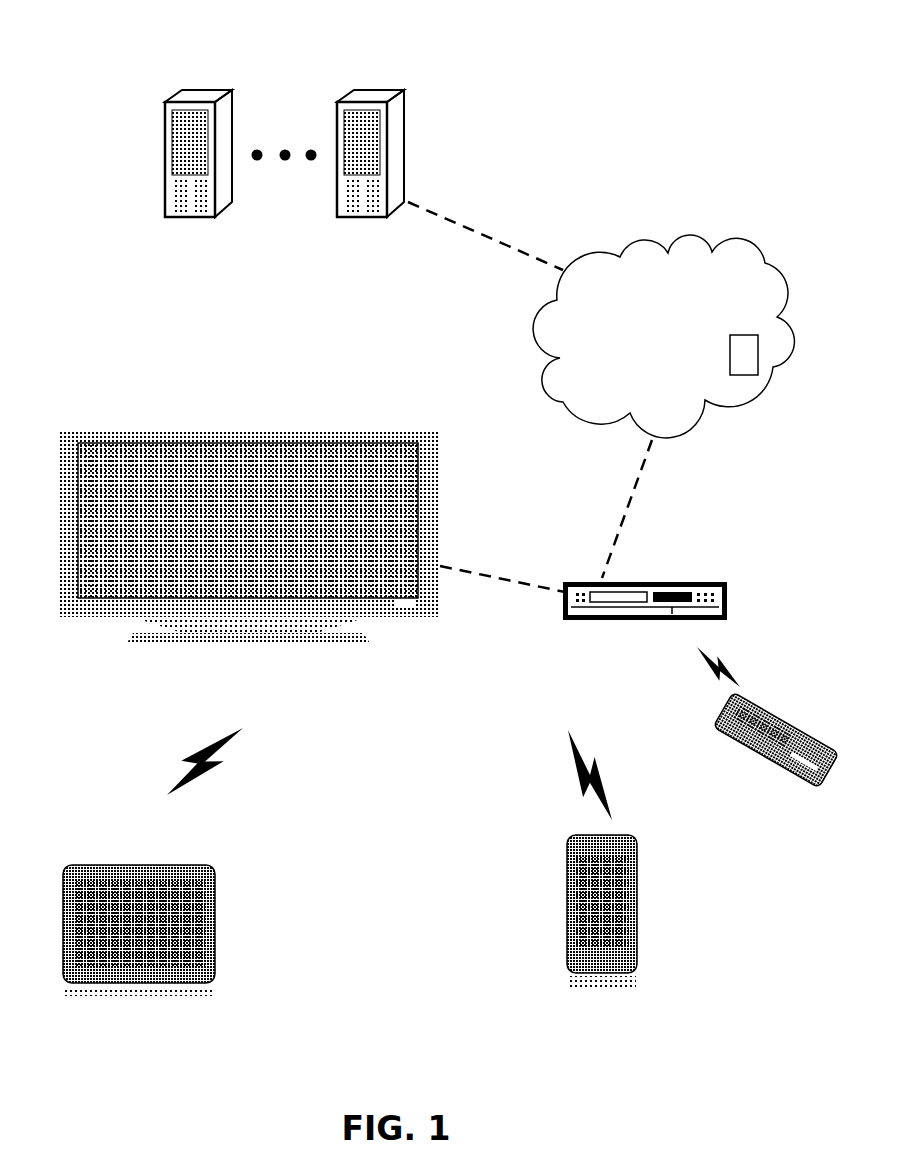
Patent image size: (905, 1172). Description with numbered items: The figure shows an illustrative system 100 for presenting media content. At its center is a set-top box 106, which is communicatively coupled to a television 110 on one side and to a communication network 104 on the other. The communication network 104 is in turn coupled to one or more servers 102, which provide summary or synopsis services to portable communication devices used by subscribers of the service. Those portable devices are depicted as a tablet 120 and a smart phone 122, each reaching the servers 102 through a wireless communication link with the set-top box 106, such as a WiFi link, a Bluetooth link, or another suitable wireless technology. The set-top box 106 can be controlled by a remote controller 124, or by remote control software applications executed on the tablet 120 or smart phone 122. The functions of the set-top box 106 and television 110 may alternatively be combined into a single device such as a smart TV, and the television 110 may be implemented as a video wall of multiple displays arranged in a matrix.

The system 100 is at (452, 571).
The servers 102 is at (370, 93).
The communication network 104 is at (642, 364).
The set-top box 106 is at (670, 580).
The television 110 is at (242, 432).
The tablet 120 is at (215, 935).
The smart phone 122 is at (633, 903).
The remote controller 124 is at (767, 710).